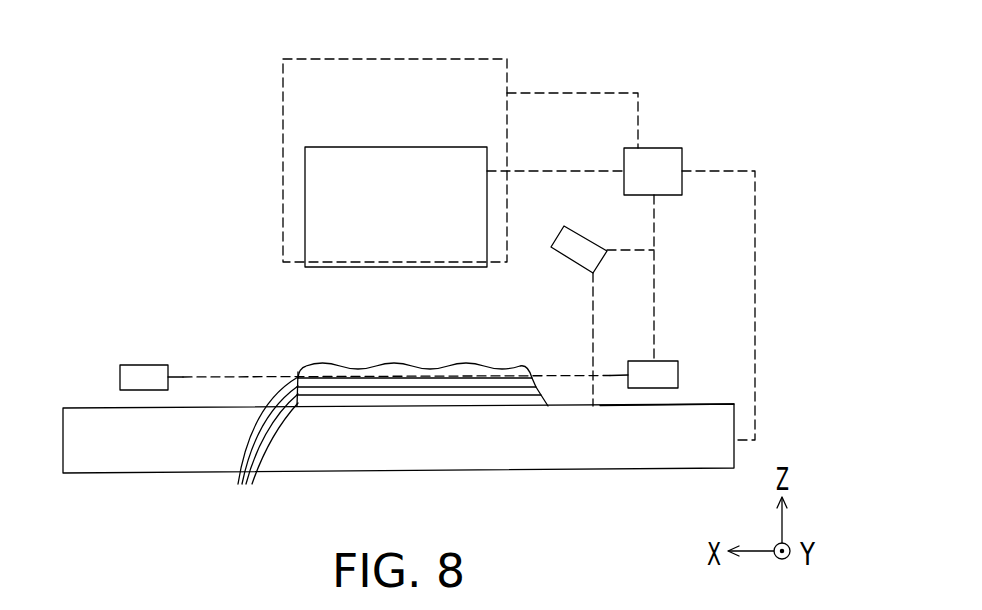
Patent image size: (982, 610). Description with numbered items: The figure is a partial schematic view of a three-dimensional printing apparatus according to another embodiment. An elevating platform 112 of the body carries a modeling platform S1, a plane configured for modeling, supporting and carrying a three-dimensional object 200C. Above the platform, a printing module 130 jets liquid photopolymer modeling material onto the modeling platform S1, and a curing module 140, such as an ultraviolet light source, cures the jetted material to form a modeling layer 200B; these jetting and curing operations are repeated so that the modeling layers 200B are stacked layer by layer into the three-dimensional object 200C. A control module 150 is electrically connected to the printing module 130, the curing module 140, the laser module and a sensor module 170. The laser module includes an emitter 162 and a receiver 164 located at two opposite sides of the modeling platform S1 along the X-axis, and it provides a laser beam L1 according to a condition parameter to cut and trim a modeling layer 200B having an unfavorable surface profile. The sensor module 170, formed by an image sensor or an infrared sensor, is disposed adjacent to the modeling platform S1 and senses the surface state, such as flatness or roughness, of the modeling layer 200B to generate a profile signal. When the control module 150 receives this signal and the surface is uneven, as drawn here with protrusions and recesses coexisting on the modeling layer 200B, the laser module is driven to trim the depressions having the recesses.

The elevating platform 112 is at (80, 420).
The printing module 130 is at (450, 160).
The curing module 140 is at (304, 72).
The control module 150 is at (663, 158).
The emitter 162 is at (640, 365).
The receiver 164 is at (146, 374).
The sensor module 170 is at (588, 248).
The laser beam L1 is at (212, 372).
The modeling platform S1 is at (704, 403).
The modeling layer 200B is at (260, 451).
The 3D object 200C is at (492, 329).